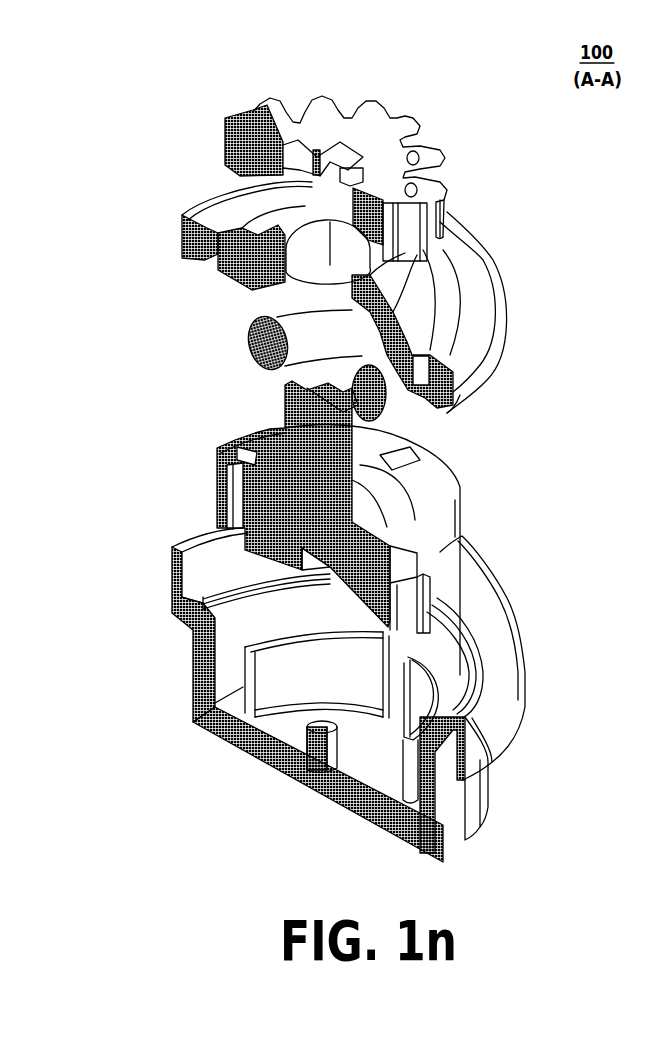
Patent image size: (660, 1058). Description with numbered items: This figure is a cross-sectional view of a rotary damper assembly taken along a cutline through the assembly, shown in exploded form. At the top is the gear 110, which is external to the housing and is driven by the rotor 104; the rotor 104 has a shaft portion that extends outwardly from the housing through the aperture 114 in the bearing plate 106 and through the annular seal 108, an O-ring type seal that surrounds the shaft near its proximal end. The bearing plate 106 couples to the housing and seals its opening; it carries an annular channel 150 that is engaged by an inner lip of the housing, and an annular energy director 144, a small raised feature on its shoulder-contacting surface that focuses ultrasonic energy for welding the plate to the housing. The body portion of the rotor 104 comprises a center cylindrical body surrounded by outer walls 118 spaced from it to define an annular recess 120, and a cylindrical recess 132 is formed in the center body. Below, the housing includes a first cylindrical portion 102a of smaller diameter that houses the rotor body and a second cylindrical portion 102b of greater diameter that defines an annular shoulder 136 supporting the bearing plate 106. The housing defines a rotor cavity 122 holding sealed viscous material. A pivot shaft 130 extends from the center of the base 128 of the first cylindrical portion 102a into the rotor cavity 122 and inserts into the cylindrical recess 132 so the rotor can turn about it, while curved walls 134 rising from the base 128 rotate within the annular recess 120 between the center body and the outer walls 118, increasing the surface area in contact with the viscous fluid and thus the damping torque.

The first cylindrical portion 102a is at (487, 780).
The second cylindrical portion 102b is at (523, 662).
The rotor 104 is at (465, 510).
The bearing plate 106 is at (510, 292).
The annular seal 108 is at (253, 328).
The gear 110 is at (447, 168).
The aperture 114 is at (320, 246).
The outer walls 118 is at (227, 490).
The annular recess 120 is at (430, 630).
The rotor cavity 122 is at (448, 660).
The base 128 is at (352, 810).
The pivot shaft 130 is at (303, 735).
The cylindrical recess 132 is at (313, 573).
The curved walls 134 is at (254, 642).
The annular shoulder 136 is at (193, 602).
The annular energy director 144 is at (445, 413).
The annular channel 150 is at (208, 263).